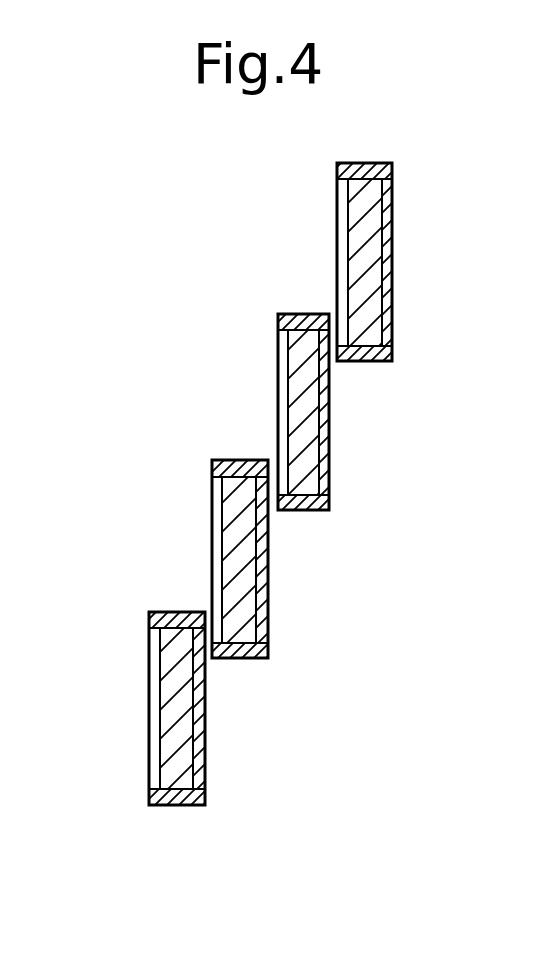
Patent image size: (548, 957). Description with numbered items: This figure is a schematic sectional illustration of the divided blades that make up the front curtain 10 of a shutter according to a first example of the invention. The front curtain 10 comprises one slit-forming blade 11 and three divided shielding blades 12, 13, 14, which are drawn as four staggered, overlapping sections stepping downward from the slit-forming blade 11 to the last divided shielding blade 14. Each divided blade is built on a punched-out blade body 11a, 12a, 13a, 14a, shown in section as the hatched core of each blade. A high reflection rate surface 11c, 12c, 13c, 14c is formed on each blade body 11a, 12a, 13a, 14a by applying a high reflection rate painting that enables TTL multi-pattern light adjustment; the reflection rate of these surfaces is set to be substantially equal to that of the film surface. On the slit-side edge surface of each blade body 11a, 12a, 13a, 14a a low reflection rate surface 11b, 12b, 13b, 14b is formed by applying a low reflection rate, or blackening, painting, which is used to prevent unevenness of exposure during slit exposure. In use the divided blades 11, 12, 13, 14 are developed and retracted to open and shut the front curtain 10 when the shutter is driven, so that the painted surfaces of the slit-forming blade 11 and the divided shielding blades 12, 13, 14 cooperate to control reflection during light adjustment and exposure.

The front curtain 10 is at (228, 356).
The slit-forming blade 11 is at (355, 255).
The blade body 11a is at (362, 232).
The low reflection rate surface 11b is at (346, 164).
The high reflection rate surface 11c is at (342, 270).
The divided shielding blade 12 is at (269, 394).
The blade body 12a is at (300, 386).
The low reflection rate surface 12b is at (293, 314).
The high reflection rate surface 12c is at (285, 417).
The divided shielding blade 13 is at (251, 539).
The blade body 13a is at (240, 545).
The low reflection rate surface 13b is at (233, 463).
The high reflection rate surface 13c is at (217, 505).
The divided shielding blade 14 is at (176, 683).
The blade body 14a is at (168, 707).
The low reflection rate surface 14b is at (167, 613).
The high reflection rate surface 14c is at (152, 655).